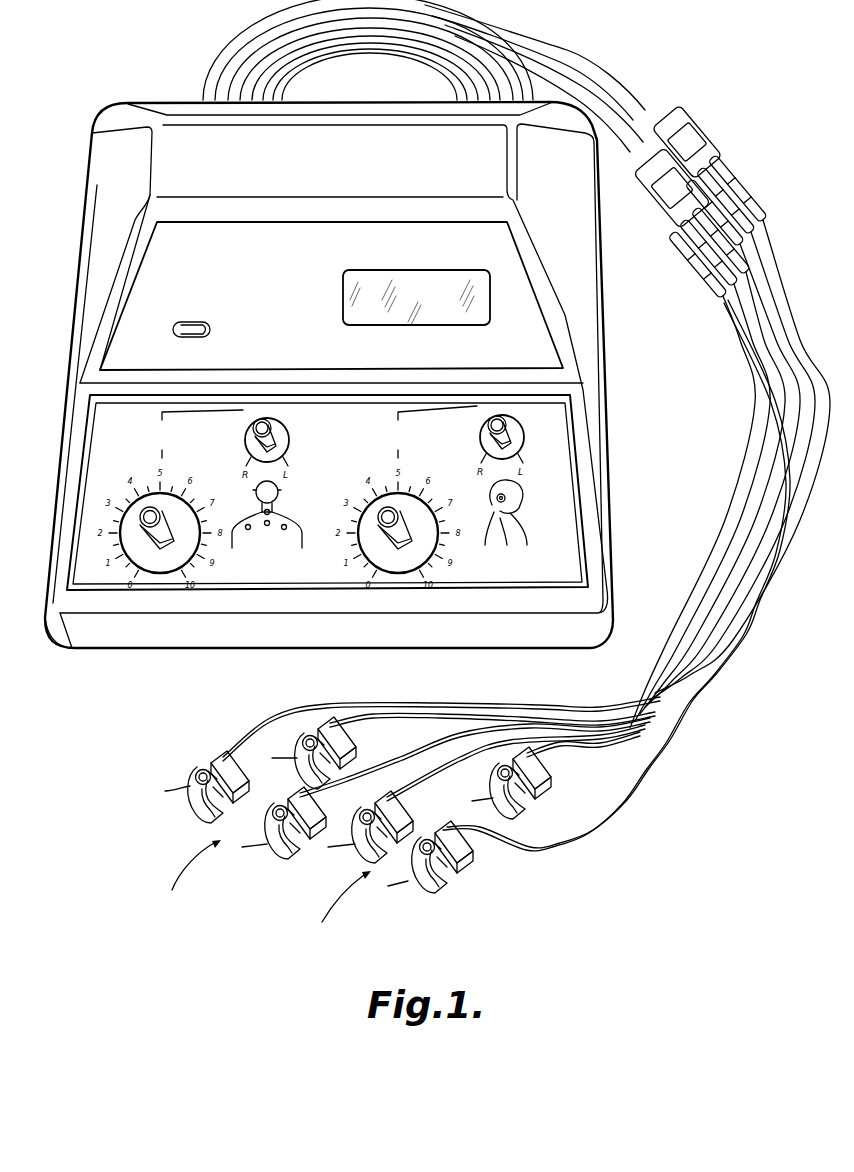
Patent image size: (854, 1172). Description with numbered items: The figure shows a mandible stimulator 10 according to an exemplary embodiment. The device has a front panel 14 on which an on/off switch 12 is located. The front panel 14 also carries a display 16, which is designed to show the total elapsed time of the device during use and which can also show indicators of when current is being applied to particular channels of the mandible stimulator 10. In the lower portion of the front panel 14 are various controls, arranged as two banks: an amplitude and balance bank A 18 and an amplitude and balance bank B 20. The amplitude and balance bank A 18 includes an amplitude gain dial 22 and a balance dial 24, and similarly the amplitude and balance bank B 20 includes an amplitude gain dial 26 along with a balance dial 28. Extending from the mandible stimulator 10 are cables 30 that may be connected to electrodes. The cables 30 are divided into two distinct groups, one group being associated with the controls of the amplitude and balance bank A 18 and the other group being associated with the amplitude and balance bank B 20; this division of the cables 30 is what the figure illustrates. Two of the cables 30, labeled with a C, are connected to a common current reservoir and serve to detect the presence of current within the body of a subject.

The mandible stimulator 10 is at (110, 97).
The on/off switch 12 is at (173, 328).
The front panel 14 is at (162, 264).
The display 16 is at (473, 308).
The amplitude and balance bank A 18 is at (545, 506).
The amplitude and balance bank B 20 is at (312, 479).
The amplitude gain dial 22 is at (398, 563).
The balance dial 24 is at (520, 442).
The amplitude gain dial 26 is at (153, 567).
The balance dial 28 is at (247, 439).
The cables 30 is at (730, 692).